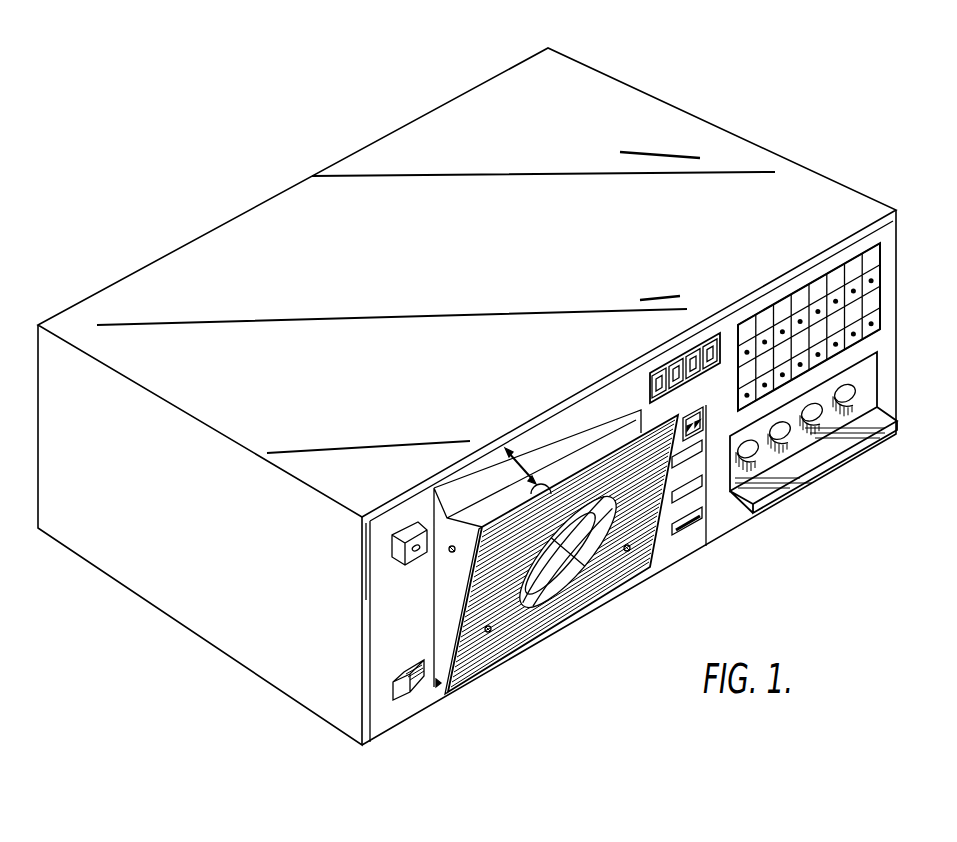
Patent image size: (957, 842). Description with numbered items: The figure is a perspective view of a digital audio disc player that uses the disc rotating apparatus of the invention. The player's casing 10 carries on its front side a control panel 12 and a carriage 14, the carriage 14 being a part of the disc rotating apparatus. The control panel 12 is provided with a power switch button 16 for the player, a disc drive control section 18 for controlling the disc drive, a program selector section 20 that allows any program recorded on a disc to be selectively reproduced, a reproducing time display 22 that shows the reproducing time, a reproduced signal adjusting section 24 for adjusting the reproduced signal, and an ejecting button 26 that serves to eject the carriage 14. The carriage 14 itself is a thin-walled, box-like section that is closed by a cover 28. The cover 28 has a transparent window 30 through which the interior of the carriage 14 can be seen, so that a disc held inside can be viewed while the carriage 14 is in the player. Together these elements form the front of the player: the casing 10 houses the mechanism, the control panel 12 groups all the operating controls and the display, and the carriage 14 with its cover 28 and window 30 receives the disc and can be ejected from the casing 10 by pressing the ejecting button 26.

The casing 10 is at (827, 194).
The control panel 12 is at (877, 236).
The carriage 14 is at (548, 640).
The power switch button 16 is at (405, 562).
The disc drive control section 18 is at (717, 525).
The program selector section 20 is at (882, 297).
The reproducing time display 22 is at (680, 356).
The reproduced signal adjusting section 24 is at (863, 435).
The ejecting button 26 is at (392, 678).
The cover 28 is at (572, 608).
The transparent window 30 is at (597, 545).